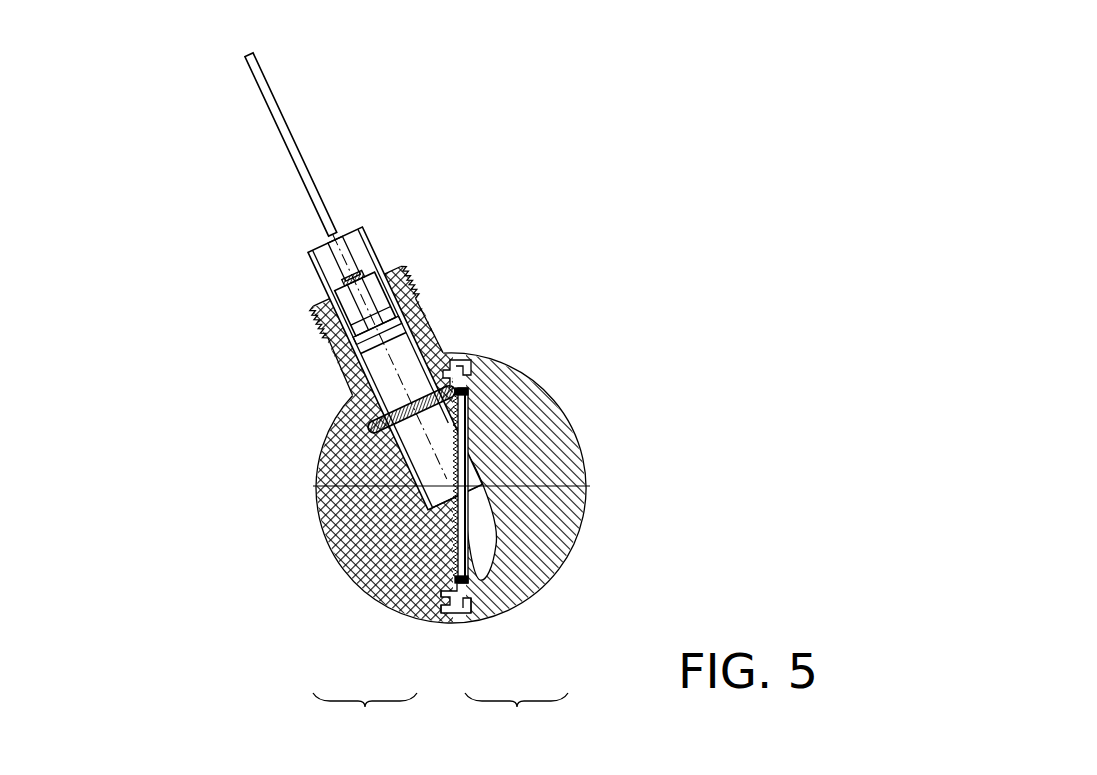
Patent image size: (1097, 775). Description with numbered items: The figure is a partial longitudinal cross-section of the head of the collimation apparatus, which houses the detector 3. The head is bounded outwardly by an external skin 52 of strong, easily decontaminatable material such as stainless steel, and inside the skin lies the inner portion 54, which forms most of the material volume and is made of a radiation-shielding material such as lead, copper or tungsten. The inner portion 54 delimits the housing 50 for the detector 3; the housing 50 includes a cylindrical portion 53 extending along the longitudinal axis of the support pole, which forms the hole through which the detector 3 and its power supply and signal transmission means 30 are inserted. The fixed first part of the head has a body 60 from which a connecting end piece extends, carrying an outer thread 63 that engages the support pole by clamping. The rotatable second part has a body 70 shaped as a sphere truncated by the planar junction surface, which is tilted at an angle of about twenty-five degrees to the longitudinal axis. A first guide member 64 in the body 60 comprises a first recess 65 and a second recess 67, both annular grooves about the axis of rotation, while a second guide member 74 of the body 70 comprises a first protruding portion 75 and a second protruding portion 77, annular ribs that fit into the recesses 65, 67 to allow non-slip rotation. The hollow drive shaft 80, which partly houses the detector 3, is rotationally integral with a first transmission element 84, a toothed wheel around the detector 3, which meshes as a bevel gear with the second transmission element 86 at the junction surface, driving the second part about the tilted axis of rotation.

The detector 3 is at (440, 335).
The power supply and signal transmission means 30 is at (271, 112).
The housing 50 is at (404, 457).
The external skin 52 is at (585, 462).
The cylindrical portion 53 is at (393, 372).
The inner portion 54 is at (548, 540).
The body 60 is at (320, 518).
The outer thread 63 is at (318, 320).
The first guide member 64 is at (365, 714).
The first recess 65 is at (410, 613).
The second recess 67 is at (387, 603).
The body 70 is at (575, 500).
The second guide member 74 is at (516, 714).
The first protruding portion 75 is at (443, 620).
The second protruding portion 77 is at (507, 613).
The drive shaft 80 is at (318, 266).
The first transmission element 84 is at (462, 375).
The second transmission element 86 is at (462, 436).